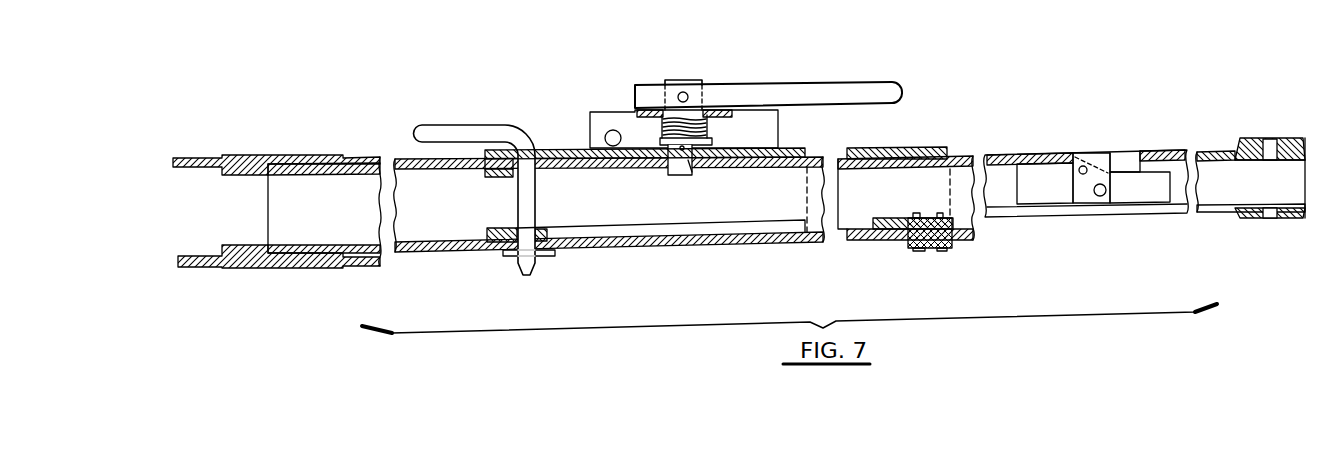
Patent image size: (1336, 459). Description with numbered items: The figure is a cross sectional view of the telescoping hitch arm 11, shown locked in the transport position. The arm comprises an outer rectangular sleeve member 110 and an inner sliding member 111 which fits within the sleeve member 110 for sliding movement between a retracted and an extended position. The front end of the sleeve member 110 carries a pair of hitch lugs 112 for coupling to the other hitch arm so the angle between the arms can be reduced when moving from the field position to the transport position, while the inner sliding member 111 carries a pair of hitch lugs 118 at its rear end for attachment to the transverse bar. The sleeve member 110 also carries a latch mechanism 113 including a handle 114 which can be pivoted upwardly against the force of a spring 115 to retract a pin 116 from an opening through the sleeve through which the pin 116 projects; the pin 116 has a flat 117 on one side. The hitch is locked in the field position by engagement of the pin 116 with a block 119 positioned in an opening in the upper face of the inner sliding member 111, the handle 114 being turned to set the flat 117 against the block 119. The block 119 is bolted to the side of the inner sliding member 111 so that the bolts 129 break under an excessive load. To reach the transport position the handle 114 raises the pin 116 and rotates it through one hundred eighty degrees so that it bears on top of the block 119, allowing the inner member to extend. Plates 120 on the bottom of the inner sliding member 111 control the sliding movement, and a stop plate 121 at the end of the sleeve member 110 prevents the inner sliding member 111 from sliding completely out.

The telescoping hitch arm 11 is at (393, 128).
The outer rectangular sleeve member 110 is at (386, 158).
The inner sliding member 111 is at (497, 190).
The hitch lugs 112 is at (235, 157).
The latch mechanism 113 is at (687, 80).
The handle 114 is at (858, 90).
The spring 115 is at (707, 125).
The pin 116 is at (680, 176).
The flat 117 is at (692, 173).
The hitch lugs 118 is at (1253, 139).
The block 119 is at (1080, 198).
The plates 120 is at (487, 233).
The stop plate 121 is at (932, 213).
The bolts 129 is at (1085, 165).